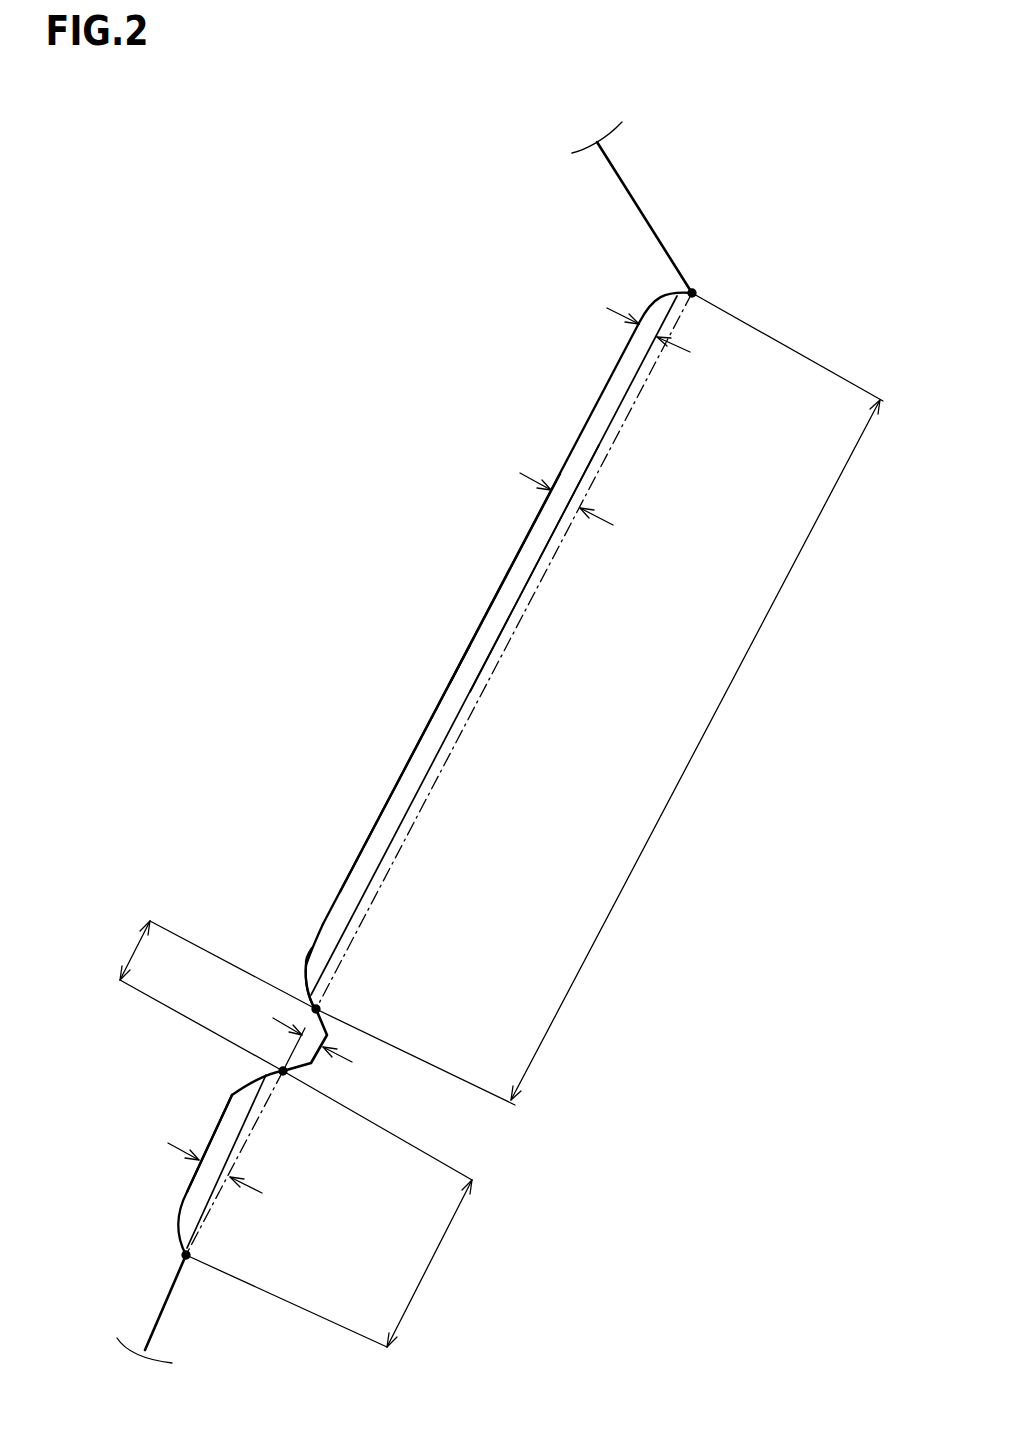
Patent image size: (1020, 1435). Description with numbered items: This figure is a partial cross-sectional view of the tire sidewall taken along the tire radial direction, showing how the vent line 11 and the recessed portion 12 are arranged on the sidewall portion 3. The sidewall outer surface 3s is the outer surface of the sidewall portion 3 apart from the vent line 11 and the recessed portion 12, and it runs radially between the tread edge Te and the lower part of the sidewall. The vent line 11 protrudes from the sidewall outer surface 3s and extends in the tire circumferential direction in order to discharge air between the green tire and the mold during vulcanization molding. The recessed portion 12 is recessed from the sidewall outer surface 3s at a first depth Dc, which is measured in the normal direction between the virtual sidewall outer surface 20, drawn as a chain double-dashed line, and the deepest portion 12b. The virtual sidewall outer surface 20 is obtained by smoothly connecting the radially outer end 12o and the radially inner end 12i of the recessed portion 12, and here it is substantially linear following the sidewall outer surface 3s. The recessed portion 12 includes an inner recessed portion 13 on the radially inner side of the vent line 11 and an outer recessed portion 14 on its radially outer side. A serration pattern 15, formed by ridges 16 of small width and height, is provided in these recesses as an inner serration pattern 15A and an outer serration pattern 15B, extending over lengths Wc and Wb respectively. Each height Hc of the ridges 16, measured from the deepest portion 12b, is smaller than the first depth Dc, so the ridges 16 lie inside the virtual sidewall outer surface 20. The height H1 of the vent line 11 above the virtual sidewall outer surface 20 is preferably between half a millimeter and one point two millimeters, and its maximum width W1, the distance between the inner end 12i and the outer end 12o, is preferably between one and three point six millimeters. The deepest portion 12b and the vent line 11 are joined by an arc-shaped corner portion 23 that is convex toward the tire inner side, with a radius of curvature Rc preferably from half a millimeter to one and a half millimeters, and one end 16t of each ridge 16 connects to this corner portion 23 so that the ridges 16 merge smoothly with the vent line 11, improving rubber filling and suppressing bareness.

The tread edge Te is at (692, 293).
The radially outer end of the recessed portion 12o is at (692, 293).
The recessed portion 12 is at (588, 427).
The serration pattern 15 is at (480, 677).
The outer serration pattern 15B is at (525, 592).
The virtual sidewall outer surface 20 is at (442, 772).
The height of the ridges Hc is at (638, 326).
The first depth Dc is at (548, 492).
The deepest portion of the recessed portion 12b is at (490, 610).
The ridges 16 is at (420, 735).
The outer recessed portion 14 is at (366, 851).
The length of the outer serration range Wb is at (599, 699).
The corner portion 23 is at (322, 935).
The one end of the ridge 16t is at (305, 967).
The radius of curvature of the corner portion Rc is at (308, 978).
The maximum width of the vent line W1 is at (202, 996).
The radially inner end of the recessed portion 12i is at (315, 1008).
The vent line 11 is at (316, 1061).
The height of the vent line H1 is at (352, 1062).
The inner recessed portion 13 is at (236, 1113).
The inner serration pattern 15A is at (214, 1194).
The length of the inner serration range Wc is at (330, 1209).
The sidewall outer surface 3s is at (166, 1307).
The sidewall portion 3 is at (533, 1140).